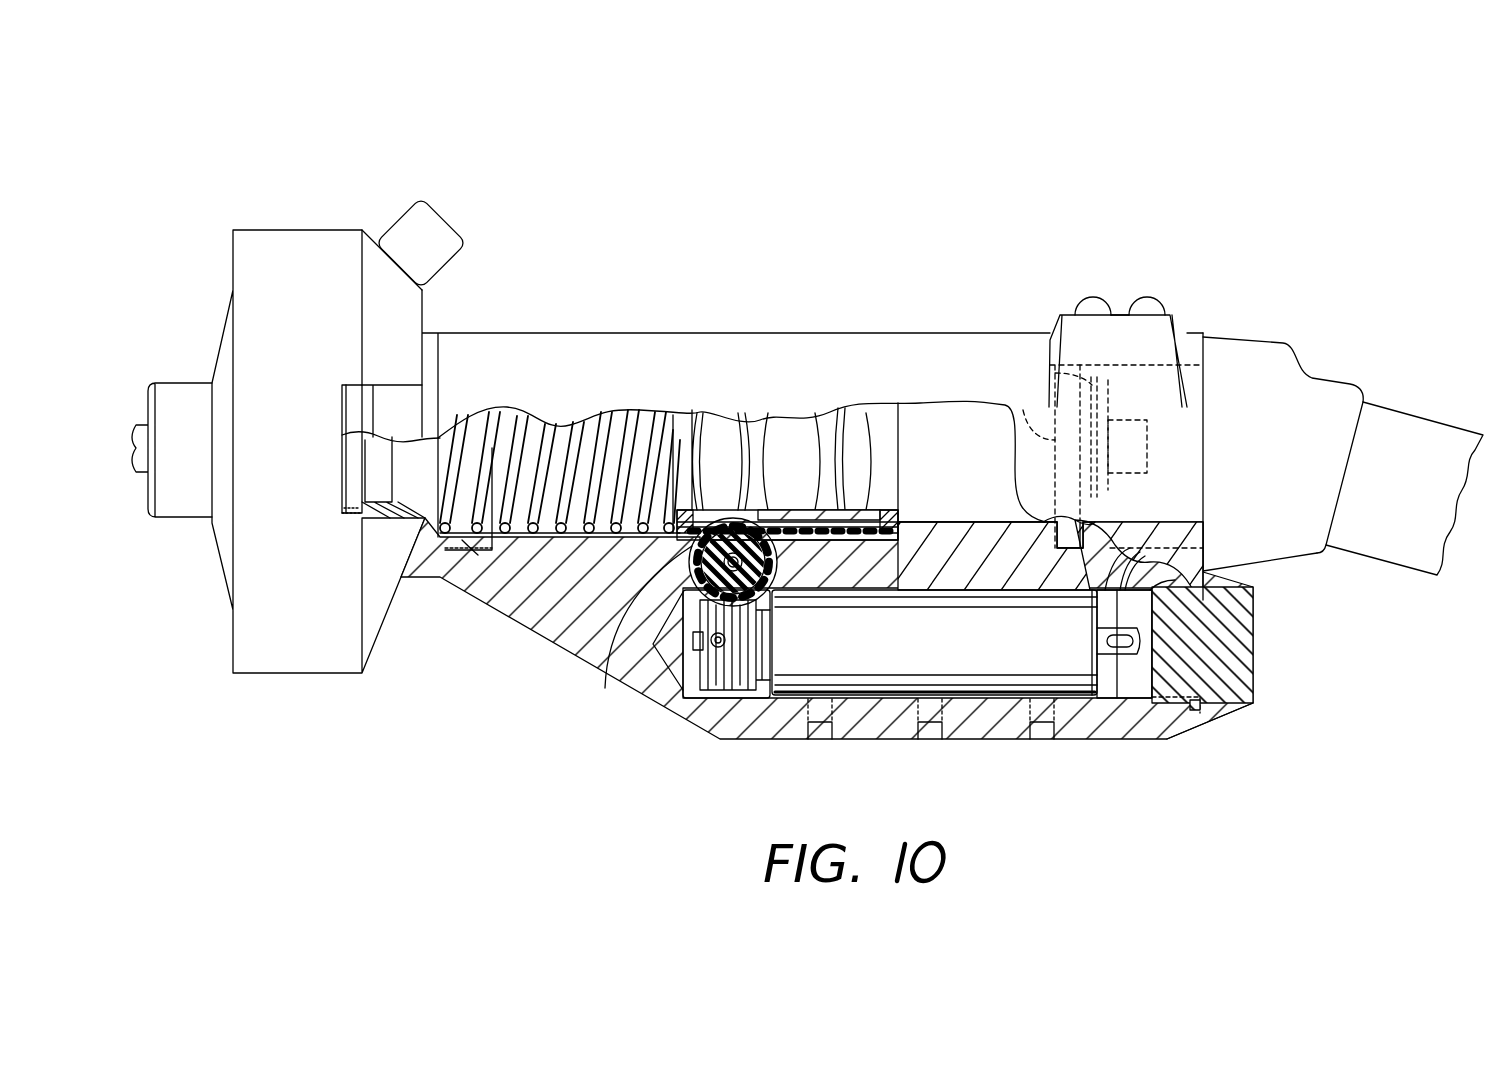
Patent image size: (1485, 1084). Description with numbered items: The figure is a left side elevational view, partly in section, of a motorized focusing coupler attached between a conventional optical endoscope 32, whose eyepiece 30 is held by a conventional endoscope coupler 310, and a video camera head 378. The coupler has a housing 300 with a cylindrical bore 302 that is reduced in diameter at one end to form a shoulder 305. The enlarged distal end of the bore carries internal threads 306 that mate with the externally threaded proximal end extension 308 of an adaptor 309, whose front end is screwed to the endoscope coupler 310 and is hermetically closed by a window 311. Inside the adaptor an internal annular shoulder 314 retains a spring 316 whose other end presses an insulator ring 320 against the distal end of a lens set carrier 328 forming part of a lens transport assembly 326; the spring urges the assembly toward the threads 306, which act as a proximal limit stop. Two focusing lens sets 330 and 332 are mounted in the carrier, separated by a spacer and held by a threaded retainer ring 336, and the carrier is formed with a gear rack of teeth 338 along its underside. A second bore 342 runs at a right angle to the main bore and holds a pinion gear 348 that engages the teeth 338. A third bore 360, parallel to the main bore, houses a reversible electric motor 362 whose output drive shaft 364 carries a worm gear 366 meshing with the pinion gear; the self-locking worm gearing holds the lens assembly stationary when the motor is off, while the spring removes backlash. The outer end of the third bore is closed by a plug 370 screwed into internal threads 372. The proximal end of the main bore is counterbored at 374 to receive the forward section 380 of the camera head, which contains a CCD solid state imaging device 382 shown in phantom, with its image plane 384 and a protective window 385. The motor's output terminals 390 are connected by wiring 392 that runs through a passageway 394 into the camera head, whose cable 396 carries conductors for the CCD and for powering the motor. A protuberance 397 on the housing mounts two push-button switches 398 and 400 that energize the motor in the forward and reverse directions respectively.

The eyepiece 30 is at (220, 348).
The optical endoscope 32 is at (180, 517).
The housing 300 is at (610, 330).
The cylindrical bore 302 is at (520, 560).
The shoulder 305 is at (880, 518).
The internal threads 306 is at (476, 553).
The proximal end extension 308 is at (423, 577).
The adaptor 309 is at (336, 511).
The endoscope coupler 310 is at (303, 682).
The window 311 is at (345, 467).
The internal annular shoulder 314 is at (424, 520).
The spring 316 is at (480, 432).
The insulator ring 320 is at (668, 508).
The lens transport assembly 326 is at (778, 432).
The lens set carrier 328 is at (838, 503).
The lens set 330 is at (722, 420).
The lens set 332 is at (826, 428).
The retainer ring 336 is at (899, 523).
The teeth 338 is at (872, 542).
The second bore 342 is at (600, 636).
The pinion gear 348 is at (652, 590).
The third bore 360 is at (1118, 698).
The reversible electric motor 362 is at (962, 700).
The output drive shaft 364 is at (763, 641).
The worm gear 366 is at (690, 714).
The plug 370 is at (1232, 704).
The internal threads 372 is at (1170, 712).
The counterbore 374 is at (1086, 519).
The video camera head 378 is at (1282, 346).
The forward section 380 is at (1190, 348).
The solid state imaging device 382 is at (1120, 412).
The image plane 384 is at (1053, 367).
The window 385 is at (1040, 418).
The output terminals 390 is at (1140, 641).
The wiring 392 is at (1204, 571).
The passageway 394 is at (1130, 582).
The cable 396 is at (1402, 558).
The protuberance 397 is at (1120, 306).
The push-button switch 398 is at (1085, 300).
The push-button switch 400 is at (1142, 298).